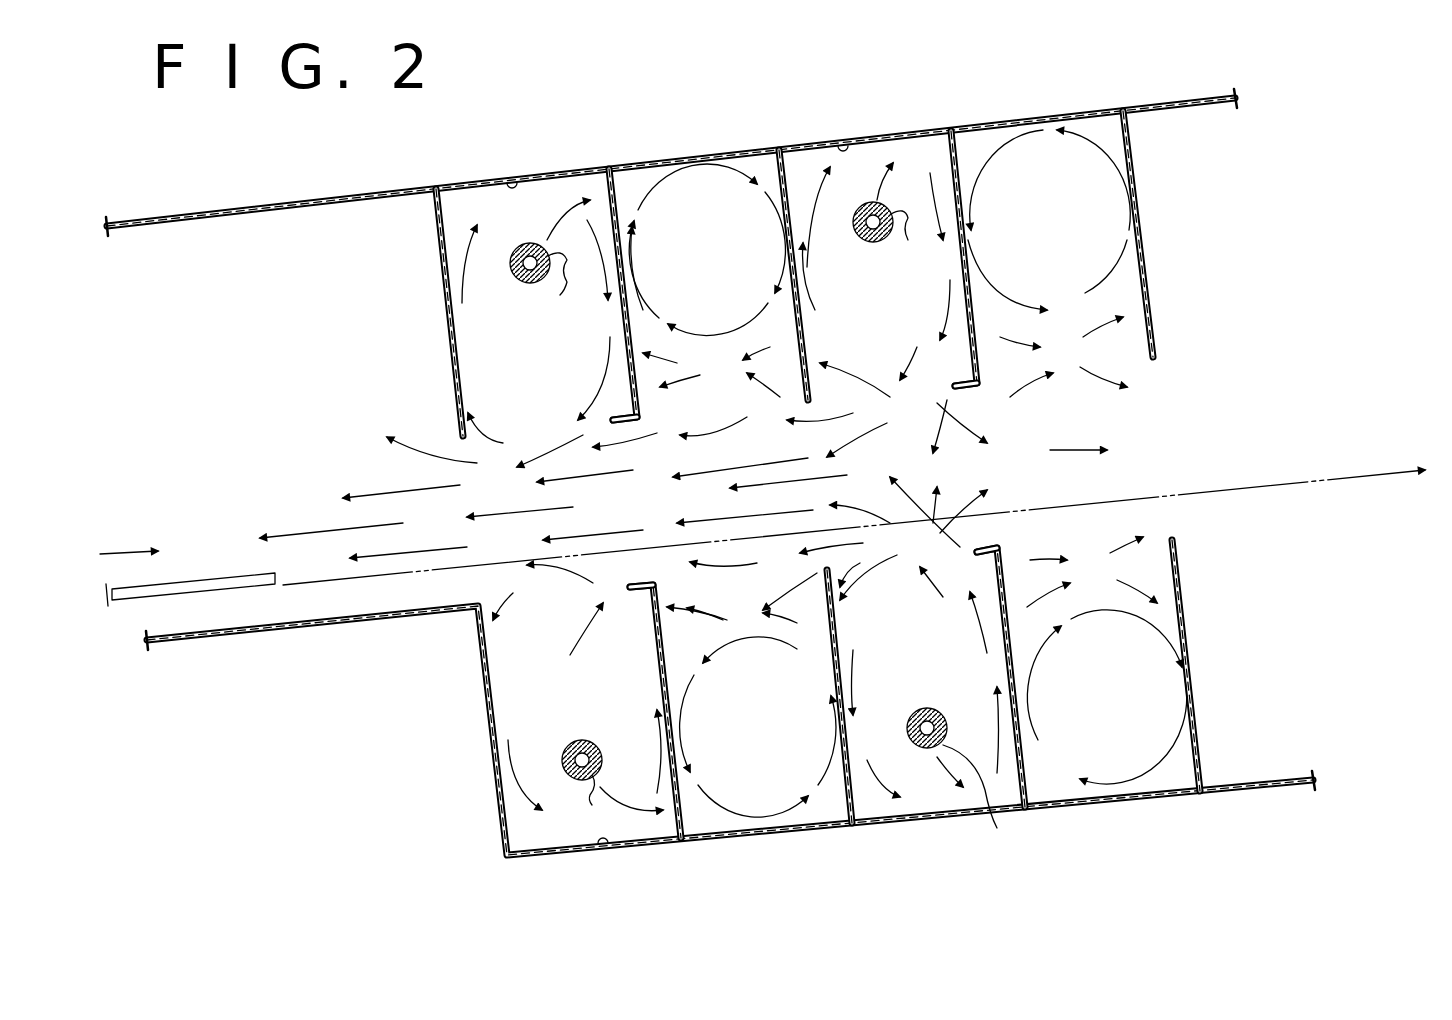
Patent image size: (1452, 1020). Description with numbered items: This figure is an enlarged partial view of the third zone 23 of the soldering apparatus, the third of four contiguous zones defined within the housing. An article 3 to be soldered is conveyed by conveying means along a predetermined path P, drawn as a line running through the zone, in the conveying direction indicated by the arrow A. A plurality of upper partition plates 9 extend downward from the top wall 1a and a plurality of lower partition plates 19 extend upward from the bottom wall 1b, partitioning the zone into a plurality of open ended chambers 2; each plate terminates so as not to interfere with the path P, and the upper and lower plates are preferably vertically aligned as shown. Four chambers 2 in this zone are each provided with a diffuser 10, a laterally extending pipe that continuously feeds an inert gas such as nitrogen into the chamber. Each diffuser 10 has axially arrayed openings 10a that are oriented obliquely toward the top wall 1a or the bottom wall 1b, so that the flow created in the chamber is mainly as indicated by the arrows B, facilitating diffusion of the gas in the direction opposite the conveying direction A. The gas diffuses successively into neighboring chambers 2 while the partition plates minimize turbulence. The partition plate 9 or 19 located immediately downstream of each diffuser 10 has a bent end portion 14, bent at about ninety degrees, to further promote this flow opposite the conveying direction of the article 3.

The top wall 1a is at (512, 184).
The bottom wall 1b is at (603, 848).
The chamber 2 is at (459, 195).
The article 3 is at (213, 583).
The upper partition plate 9 is at (612, 312).
The diffuser 10 is at (513, 278).
The opening 10a is at (787, 537).
The bent end portion 14 is at (615, 405).
The lower partition plate 19 is at (1022, 702).
The third zone 23 is at (1005, 462).
The conveying direction A is at (129, 535).
The inert gas flow direction B is at (488, 432).
The path P is at (1305, 482).